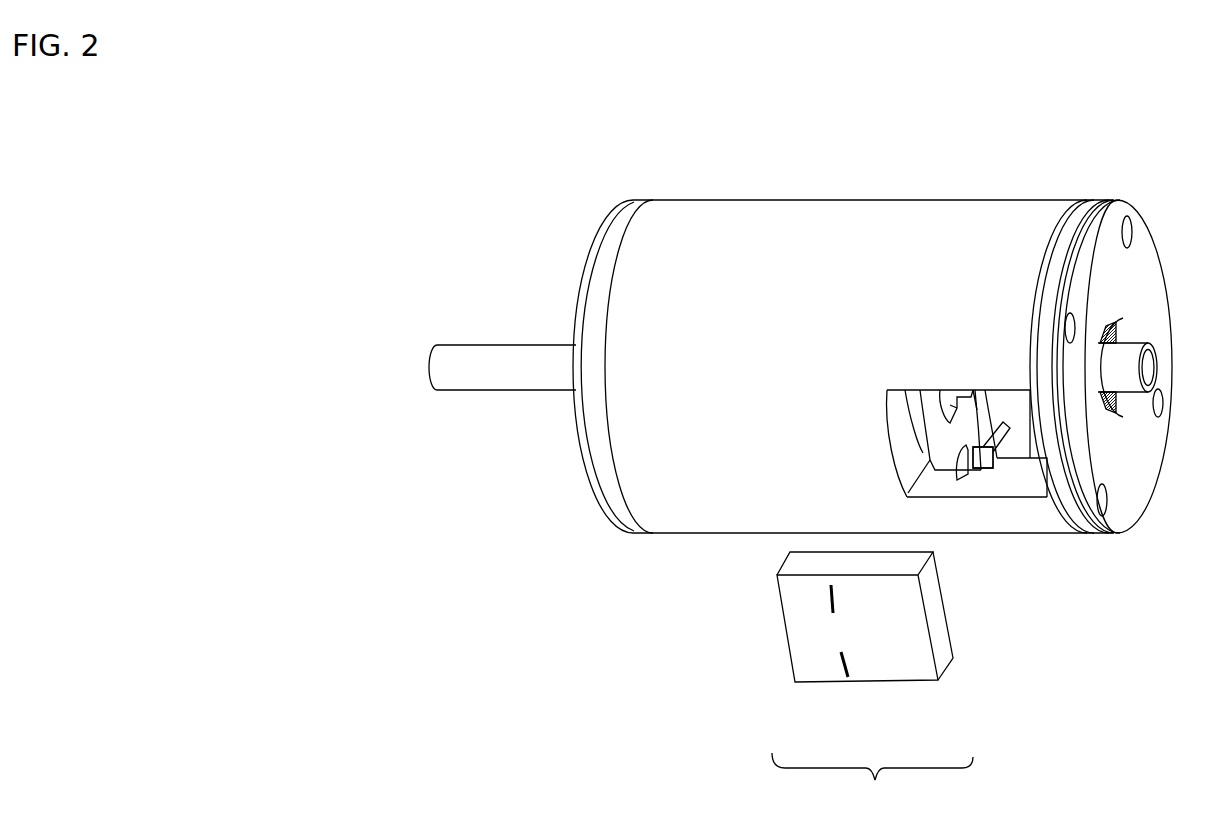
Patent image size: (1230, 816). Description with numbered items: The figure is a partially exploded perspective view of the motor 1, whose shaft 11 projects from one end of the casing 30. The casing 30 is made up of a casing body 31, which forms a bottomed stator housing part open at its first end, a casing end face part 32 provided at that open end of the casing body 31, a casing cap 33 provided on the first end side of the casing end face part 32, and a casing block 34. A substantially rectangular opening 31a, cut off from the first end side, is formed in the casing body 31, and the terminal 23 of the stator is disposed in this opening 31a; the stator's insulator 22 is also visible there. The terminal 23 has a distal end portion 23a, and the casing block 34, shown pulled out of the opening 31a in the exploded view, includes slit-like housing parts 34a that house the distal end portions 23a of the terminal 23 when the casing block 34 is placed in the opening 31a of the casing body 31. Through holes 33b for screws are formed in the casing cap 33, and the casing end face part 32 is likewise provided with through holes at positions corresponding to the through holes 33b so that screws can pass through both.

The motor 1 is at (851, 33).
The shaft 11 is at (1137, 424).
The insulator 22 is at (990, 395).
The distal end portion 23a is at (985, 420).
The terminal 23 is at (1004, 549).
The casing 30 is at (872, 782).
The casing body 31 is at (672, 518).
The opening 31a is at (930, 483).
The casing end face part 32 is at (1080, 533).
The casing cap 33 is at (1117, 520).
The through holes 33b is at (1160, 392).
The casing block 34 is at (817, 679).
The housing parts 34a is at (838, 663).